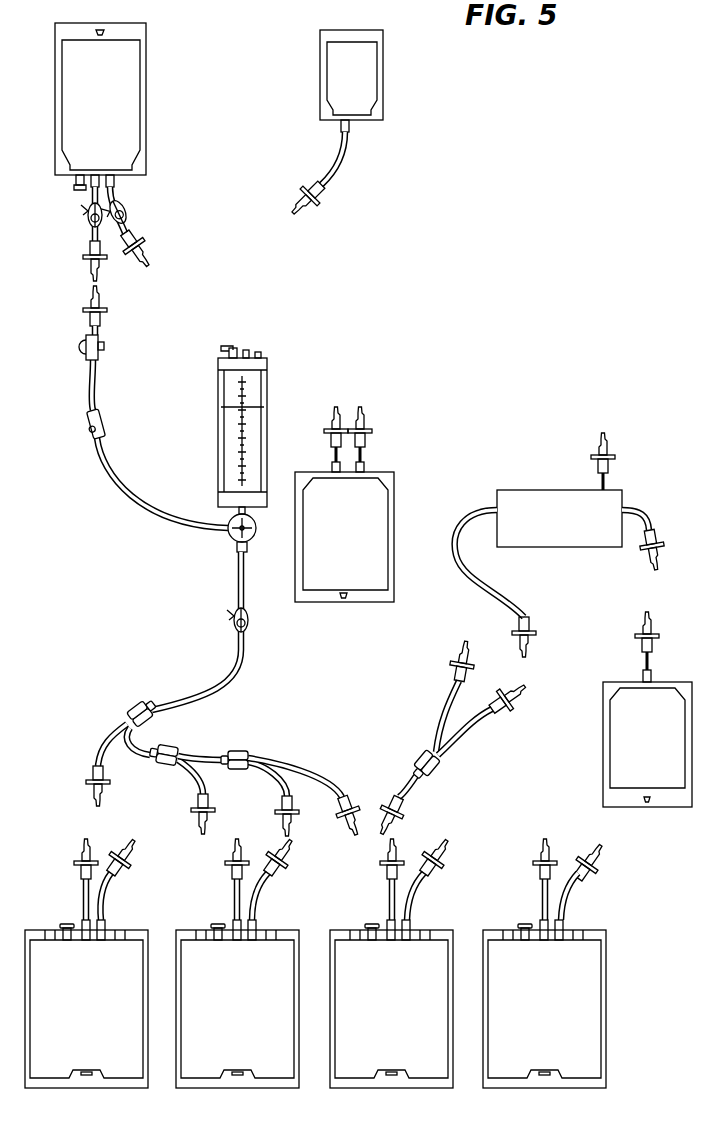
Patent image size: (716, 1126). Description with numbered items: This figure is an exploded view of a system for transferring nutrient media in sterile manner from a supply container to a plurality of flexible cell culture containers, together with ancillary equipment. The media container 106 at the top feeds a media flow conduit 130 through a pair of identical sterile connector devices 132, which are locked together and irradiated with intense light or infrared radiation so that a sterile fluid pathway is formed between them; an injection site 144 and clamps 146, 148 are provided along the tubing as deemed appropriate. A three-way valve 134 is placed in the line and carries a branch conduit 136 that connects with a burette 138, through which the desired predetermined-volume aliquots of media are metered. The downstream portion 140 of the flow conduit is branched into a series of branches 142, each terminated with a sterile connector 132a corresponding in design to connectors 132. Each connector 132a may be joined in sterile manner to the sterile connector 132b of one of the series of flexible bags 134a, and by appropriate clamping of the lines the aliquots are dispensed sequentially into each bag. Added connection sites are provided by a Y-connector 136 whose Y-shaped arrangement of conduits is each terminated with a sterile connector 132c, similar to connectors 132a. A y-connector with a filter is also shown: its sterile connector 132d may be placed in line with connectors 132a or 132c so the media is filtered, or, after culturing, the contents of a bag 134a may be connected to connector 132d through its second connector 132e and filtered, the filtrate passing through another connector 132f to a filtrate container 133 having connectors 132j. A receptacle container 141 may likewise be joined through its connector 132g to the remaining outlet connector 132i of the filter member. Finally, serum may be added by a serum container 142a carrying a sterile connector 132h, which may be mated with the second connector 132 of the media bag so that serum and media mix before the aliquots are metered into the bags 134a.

The solution container 106 is at (118, 103).
The media flow conduit 130 is at (114, 462).
The sterile connector device 132 is at (88, 255).
The sterile connector 132a is at (86, 795).
The sterile connector 132b is at (76, 848).
The sterile connector 132c is at (516, 720).
The sterile connector 132d is at (538, 630).
The second connector 132e is at (128, 862).
The connector 132f is at (614, 440).
The connector 132g is at (640, 641).
The sterile connector 132h is at (325, 208).
The outlet connector 132i is at (648, 560).
The connector 132j is at (372, 430).
The filtrate container 133 is at (362, 544).
The three-way valve 134 is at (228, 540).
The flexible bag 134a is at (104, 1001).
The branch conduit / Y-connector 136 is at (232, 512).
The burette 138 is at (270, 398).
The downstream portion of the flow conduit 140 is at (240, 668).
The receptacle container 141 is at (605, 750).
The branch 142 is at (100, 746).
The serum container 142a is at (322, 70).
The injection site 144 is at (104, 344).
The clamp 146 is at (88, 420).
The clamp 148 is at (232, 616).